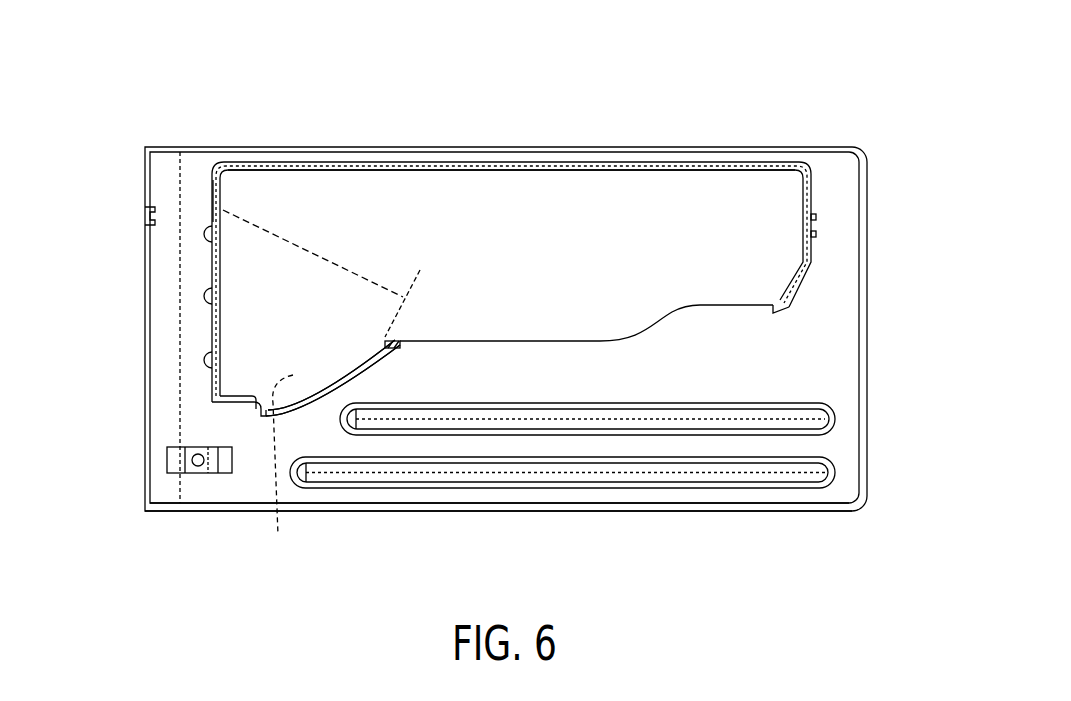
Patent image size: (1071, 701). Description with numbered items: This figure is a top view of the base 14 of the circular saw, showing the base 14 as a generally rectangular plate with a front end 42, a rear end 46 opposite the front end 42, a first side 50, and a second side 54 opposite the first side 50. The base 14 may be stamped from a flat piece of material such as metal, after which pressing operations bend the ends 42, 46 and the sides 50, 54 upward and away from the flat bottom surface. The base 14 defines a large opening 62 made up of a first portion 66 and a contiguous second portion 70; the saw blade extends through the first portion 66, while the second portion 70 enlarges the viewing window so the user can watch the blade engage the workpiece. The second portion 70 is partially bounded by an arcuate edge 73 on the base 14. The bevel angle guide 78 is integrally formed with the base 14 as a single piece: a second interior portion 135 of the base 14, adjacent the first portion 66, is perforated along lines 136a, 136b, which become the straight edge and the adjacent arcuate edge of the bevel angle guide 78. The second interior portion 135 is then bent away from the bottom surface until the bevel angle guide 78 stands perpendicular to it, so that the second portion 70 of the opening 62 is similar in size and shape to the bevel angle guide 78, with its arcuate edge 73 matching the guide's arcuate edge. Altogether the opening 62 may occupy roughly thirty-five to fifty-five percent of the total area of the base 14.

The base 14 is at (240, 53).
The front end 42 is at (120, 336).
The rear end 46 is at (900, 312).
The first side 50 is at (486, 124).
The second side 54 is at (630, 537).
The opening 62 is at (572, 248).
The first portion 66 is at (643, 167).
The second portion 70 is at (338, 392).
The arcuate edge 73 is at (312, 397).
The bevel angle guide 78 is at (214, 218).
The second interior portion 135 is at (276, 469).
The perforated line 136a is at (300, 248).
The perforated line 136b is at (404, 314).